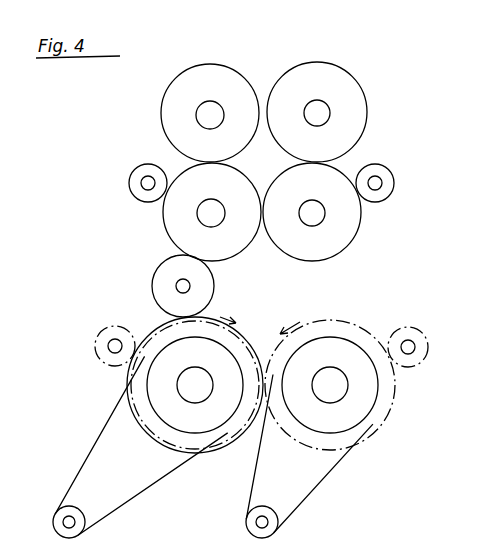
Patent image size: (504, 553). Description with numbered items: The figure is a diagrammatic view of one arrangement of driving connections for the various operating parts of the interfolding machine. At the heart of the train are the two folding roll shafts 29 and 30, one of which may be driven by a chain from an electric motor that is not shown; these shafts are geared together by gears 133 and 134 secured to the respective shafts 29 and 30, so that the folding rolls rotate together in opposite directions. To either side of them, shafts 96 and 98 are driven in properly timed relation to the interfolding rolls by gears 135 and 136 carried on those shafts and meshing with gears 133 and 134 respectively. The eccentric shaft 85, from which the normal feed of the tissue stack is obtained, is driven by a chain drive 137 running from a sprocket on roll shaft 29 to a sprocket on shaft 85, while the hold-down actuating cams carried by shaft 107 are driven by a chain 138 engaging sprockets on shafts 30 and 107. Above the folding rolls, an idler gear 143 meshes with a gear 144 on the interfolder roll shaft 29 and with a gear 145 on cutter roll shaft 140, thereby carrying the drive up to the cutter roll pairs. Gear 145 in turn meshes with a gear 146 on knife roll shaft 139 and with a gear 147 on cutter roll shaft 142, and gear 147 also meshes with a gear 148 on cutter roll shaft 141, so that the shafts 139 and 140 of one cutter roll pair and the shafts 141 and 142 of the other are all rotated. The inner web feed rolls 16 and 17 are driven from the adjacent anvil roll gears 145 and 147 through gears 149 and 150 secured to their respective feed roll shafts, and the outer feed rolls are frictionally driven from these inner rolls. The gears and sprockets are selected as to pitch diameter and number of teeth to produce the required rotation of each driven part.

The roll 16 is at (148, 176).
The roll 17 is at (375, 176).
The shaft 29 is at (197, 368).
The shaft 30 is at (327, 368).
The eccentric shaft 85 is at (76, 528).
The shaft 96 is at (108, 346).
The shaft 98 is at (415, 346).
The shaft 107 is at (270, 521).
The gear 133 is at (212, 449).
The gear 134 is at (382, 436).
The gear 135 is at (103, 361).
The gear 136 is at (428, 362).
The chain drive 137 is at (102, 434).
The chain 138 is at (322, 468).
The knife roll shaft 139 is at (214, 101).
The cutter roll shaft 140 is at (216, 200).
The cutter roll shaft 141 is at (322, 100).
The cutter roll shaft 142 is at (312, 200).
The idler gear 143 is at (152, 276).
The gear 144 is at (240, 331).
The gear 145 is at (238, 256).
The gear 146 is at (161, 124).
The gear 147 is at (359, 241).
The gear 148 is at (357, 90).
The gear 149 is at (141, 198).
The gear 150 is at (373, 200).